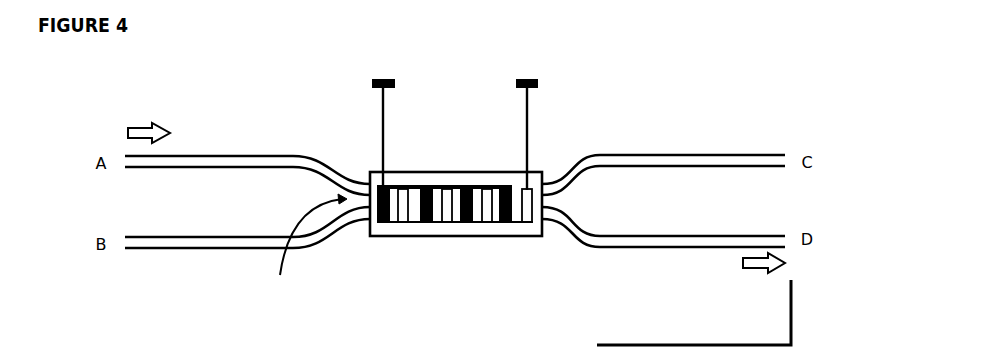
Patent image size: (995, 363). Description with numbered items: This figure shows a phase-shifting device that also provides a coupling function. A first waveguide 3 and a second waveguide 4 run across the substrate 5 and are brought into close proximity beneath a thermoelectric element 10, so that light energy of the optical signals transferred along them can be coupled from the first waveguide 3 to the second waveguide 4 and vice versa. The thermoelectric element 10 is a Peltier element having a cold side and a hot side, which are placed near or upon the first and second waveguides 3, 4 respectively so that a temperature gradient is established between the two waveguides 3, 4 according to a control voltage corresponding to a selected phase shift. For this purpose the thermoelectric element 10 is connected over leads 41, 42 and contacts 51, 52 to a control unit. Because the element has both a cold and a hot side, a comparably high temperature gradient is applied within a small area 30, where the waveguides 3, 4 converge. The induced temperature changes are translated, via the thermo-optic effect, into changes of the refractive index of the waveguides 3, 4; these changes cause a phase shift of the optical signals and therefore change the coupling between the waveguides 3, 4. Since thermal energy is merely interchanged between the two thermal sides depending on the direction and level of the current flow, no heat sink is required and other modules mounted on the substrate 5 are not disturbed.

The first waveguide 3 is at (228, 153).
The second waveguide 4 is at (228, 250).
The substrate 5 is at (694, 312).
The thermoelectric element 10 is at (473, 171).
The small area 30 is at (310, 246).
The lead 41 is at (388, 153).
The lead 42 is at (532, 153).
The contact 51 is at (358, 78).
The contact 52 is at (512, 77).